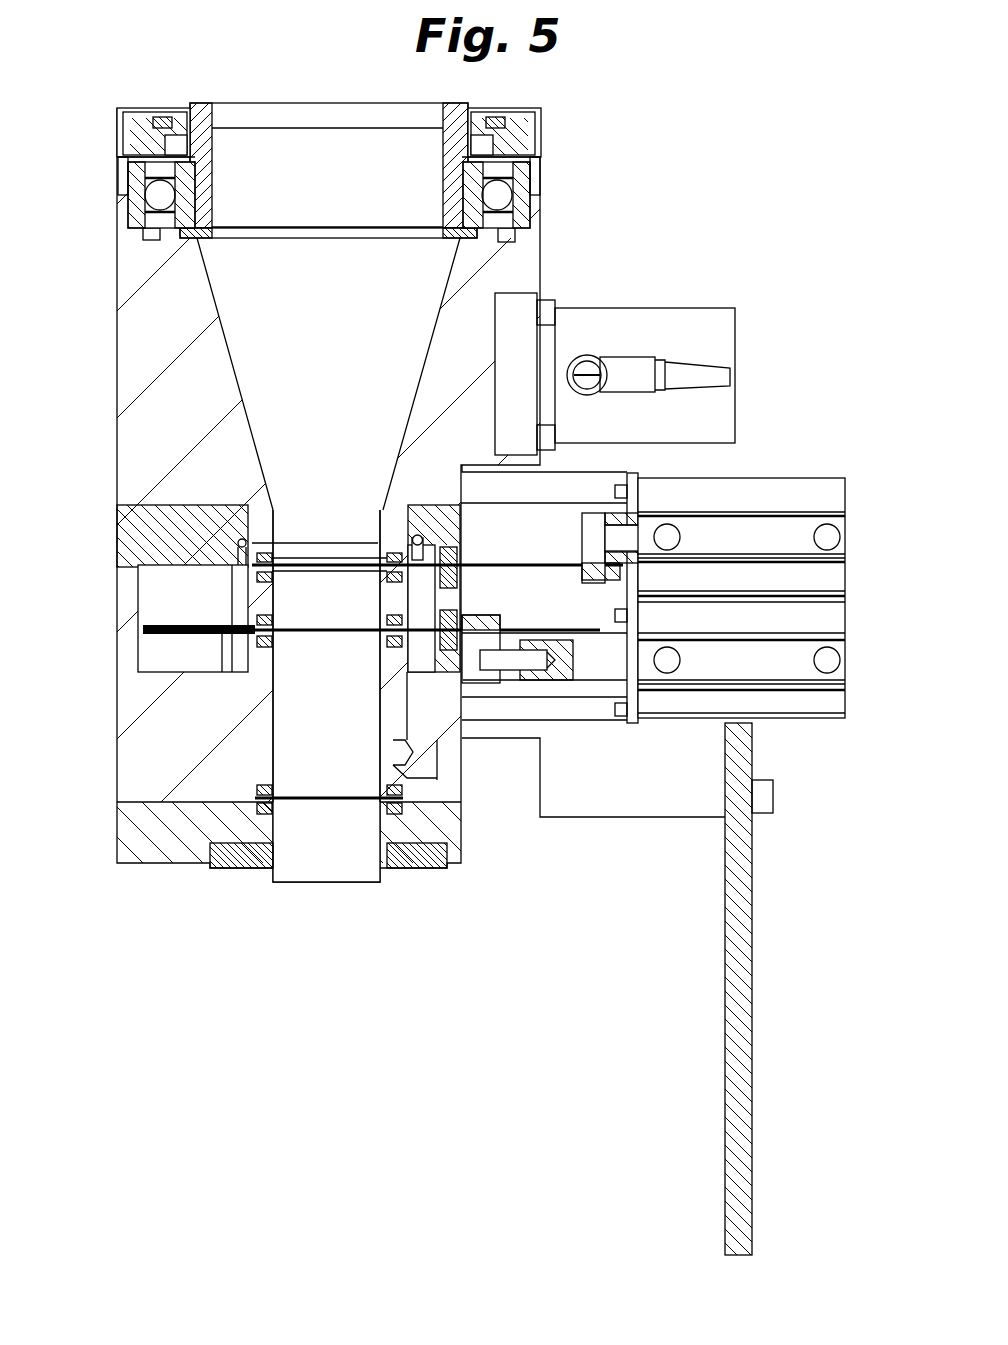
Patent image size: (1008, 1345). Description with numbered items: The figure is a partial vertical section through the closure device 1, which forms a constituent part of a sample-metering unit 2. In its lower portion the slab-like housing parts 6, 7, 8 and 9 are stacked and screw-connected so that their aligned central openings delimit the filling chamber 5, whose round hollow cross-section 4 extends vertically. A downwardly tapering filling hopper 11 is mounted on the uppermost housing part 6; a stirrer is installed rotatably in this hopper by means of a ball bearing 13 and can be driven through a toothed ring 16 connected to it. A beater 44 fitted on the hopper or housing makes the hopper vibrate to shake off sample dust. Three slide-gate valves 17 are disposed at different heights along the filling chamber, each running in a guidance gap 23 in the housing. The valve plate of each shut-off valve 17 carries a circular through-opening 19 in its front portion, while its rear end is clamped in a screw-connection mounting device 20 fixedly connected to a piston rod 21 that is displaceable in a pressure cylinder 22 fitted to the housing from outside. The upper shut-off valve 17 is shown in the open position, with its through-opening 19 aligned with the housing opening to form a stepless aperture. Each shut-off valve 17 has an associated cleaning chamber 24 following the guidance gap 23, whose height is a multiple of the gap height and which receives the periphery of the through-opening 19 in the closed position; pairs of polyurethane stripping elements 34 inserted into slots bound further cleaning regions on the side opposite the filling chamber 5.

The closure device 1 is at (125, 920).
The sample-metering unit 2 is at (588, 162).
The hollow cross-section 4 is at (328, 739).
The filling chamber 5 is at (350, 770).
The housing part 6 is at (140, 512).
The housing part 7 is at (130, 627).
The housing part 8 is at (145, 752).
The housing part 9 is at (135, 835).
The filling hopper 11 is at (160, 332).
The ball bearing 13 is at (515, 210).
The toothed ring 16 is at (520, 140).
The slide-gate valve 17 is at (560, 568).
The through-opening 19 is at (315, 562).
The screw-connection mounting device 20 is at (612, 520).
The piston rod 21 is at (598, 660).
The pressure cylinder 22 is at (800, 530).
The guidance gap 23 is at (255, 567).
The cleaning chamber 24 is at (165, 590).
The stripping element 34 is at (447, 578).
The beater 44 is at (670, 320).